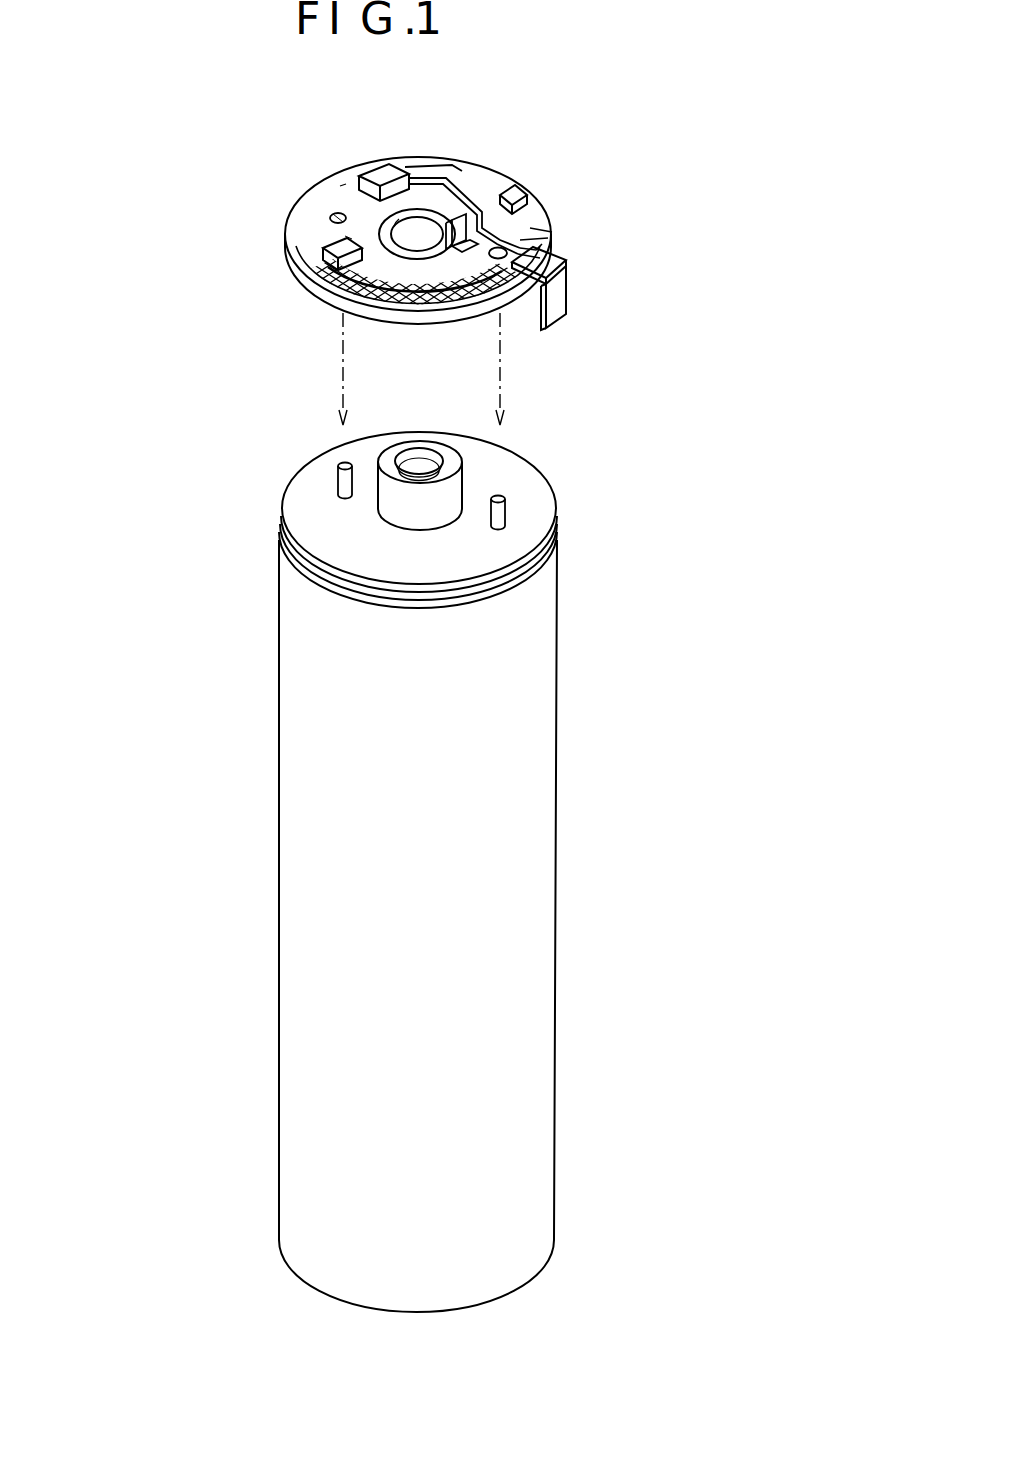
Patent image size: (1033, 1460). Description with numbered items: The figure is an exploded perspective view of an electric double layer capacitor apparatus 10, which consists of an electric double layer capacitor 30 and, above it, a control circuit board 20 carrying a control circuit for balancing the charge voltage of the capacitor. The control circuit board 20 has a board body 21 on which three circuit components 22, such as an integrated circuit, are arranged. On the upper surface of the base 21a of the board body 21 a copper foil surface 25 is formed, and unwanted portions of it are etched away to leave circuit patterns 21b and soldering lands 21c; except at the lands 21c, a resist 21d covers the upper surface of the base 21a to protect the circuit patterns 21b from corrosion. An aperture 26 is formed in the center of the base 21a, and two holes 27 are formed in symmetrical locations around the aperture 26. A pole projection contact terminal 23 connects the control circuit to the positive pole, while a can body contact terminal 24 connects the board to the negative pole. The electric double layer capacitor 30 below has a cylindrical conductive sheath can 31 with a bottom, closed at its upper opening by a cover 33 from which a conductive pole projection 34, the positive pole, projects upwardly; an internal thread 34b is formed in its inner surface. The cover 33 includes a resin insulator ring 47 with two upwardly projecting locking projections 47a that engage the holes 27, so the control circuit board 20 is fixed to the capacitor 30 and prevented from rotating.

The electric double layer capacitor apparatus 10 is at (758, 302).
The control circuit board 20 is at (607, 252).
The board body 21 is at (288, 222).
The base 21a is at (317, 193).
The circuit patterns 21b is at (428, 163).
The soldering lands 21c is at (552, 232).
The resist 21d is at (410, 305).
The circuit components 22 is at (372, 177).
The pole projection contact terminal 23 is at (455, 215).
The can body contact terminal 24 is at (566, 312).
The copper foil surface 25 is at (343, 185).
The aperture 26 is at (350, 237).
The holes 27 is at (330, 213).
The electric double layer capacitor 30 is at (602, 810).
The sheath can 31 is at (556, 690).
The cover 33 is at (288, 486).
The pole projection 34 is at (462, 482).
The internal thread 34b is at (422, 452).
The insulator ring 47 is at (535, 498).
The locking projections 47a is at (342, 483).